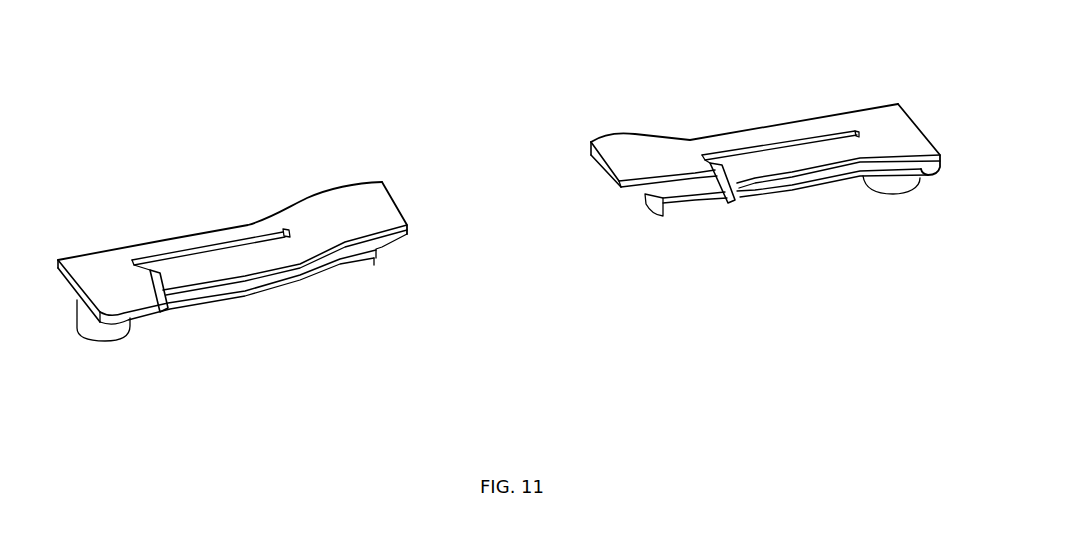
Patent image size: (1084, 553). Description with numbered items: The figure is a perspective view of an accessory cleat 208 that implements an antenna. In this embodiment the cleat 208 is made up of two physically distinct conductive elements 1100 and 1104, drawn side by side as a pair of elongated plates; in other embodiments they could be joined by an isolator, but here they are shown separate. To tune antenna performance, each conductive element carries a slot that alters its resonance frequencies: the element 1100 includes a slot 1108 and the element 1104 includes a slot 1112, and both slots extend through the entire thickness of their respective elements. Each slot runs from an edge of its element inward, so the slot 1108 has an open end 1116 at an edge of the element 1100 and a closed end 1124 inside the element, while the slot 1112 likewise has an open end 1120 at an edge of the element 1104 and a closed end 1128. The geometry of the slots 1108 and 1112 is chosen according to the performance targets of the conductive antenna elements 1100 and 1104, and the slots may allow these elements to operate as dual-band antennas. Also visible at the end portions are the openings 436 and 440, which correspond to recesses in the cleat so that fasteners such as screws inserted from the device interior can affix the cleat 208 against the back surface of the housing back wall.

The cleat 208 is at (206, 111).
The conductive element 1100 is at (307, 200).
The conductive element 1104 is at (868, 106).
The slot 1108 is at (175, 266).
The slot 1112 is at (739, 157).
The open end 1116 is at (166, 310).
The open end 1120 is at (727, 200).
The closed end 1124 is at (286, 233).
The closed end 1128 is at (853, 136).
The opening 436 is at (92, 333).
The opening 440 is at (900, 190).